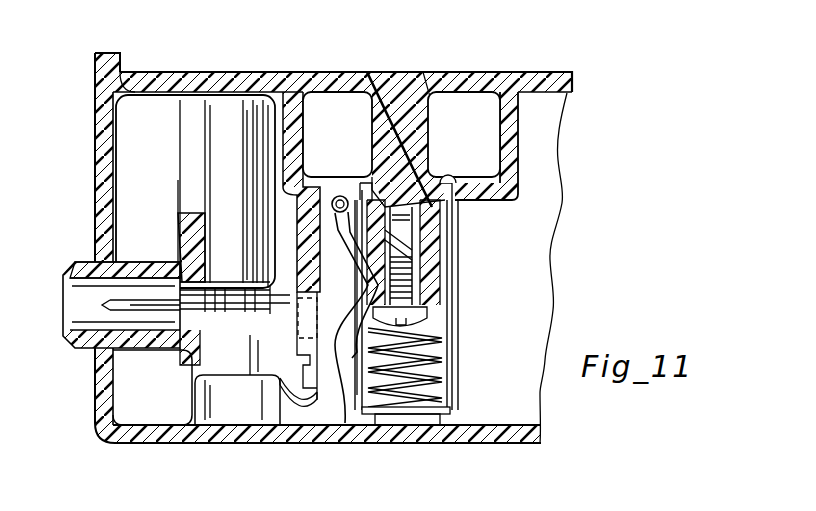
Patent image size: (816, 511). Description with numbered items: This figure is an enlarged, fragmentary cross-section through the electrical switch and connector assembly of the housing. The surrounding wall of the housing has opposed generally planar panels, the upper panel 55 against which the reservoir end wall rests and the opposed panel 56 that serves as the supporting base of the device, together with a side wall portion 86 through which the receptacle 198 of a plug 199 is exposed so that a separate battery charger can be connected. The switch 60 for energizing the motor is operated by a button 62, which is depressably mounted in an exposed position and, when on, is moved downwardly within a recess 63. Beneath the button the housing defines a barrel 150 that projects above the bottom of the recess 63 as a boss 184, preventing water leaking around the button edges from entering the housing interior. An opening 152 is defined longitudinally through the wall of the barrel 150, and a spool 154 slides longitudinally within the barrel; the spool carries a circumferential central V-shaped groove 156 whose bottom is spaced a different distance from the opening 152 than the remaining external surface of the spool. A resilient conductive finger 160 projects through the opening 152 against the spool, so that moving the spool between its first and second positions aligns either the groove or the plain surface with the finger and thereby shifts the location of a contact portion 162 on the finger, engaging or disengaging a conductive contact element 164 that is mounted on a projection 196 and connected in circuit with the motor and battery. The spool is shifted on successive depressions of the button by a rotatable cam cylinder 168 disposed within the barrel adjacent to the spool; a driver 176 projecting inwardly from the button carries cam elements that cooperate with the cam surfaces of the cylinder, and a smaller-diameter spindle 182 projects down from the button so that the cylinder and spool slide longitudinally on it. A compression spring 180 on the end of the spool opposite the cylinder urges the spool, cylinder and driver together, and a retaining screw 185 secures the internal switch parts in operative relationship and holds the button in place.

The upper panel 55 is at (236, 72).
The opposed panel 56 is at (474, 444).
The switch 60 is at (371, 118).
The button 62 is at (405, 72).
The recess 63 is at (309, 72).
The side wall portion 86 is at (96, 162).
The barrel 150 is at (447, 387).
The opening 152 is at (355, 385).
The spool 154 is at (414, 240).
The V-shaped groove 156 is at (428, 262).
The resilient conductive finger 160 is at (356, 200).
The contact portion 162 is at (350, 375).
The conductive contact element 164 is at (303, 385).
The rotatable cam cylinder 168 is at (450, 204).
The driver 176 is at (428, 115).
The compression spring 180 is at (425, 367).
The spindle 182 is at (450, 178).
The boss 184 is at (345, 196).
The retaining screw 185 is at (430, 315).
The projection 196 is at (300, 325).
The receptacle 198 is at (63, 318).
The plug 199 is at (165, 262).